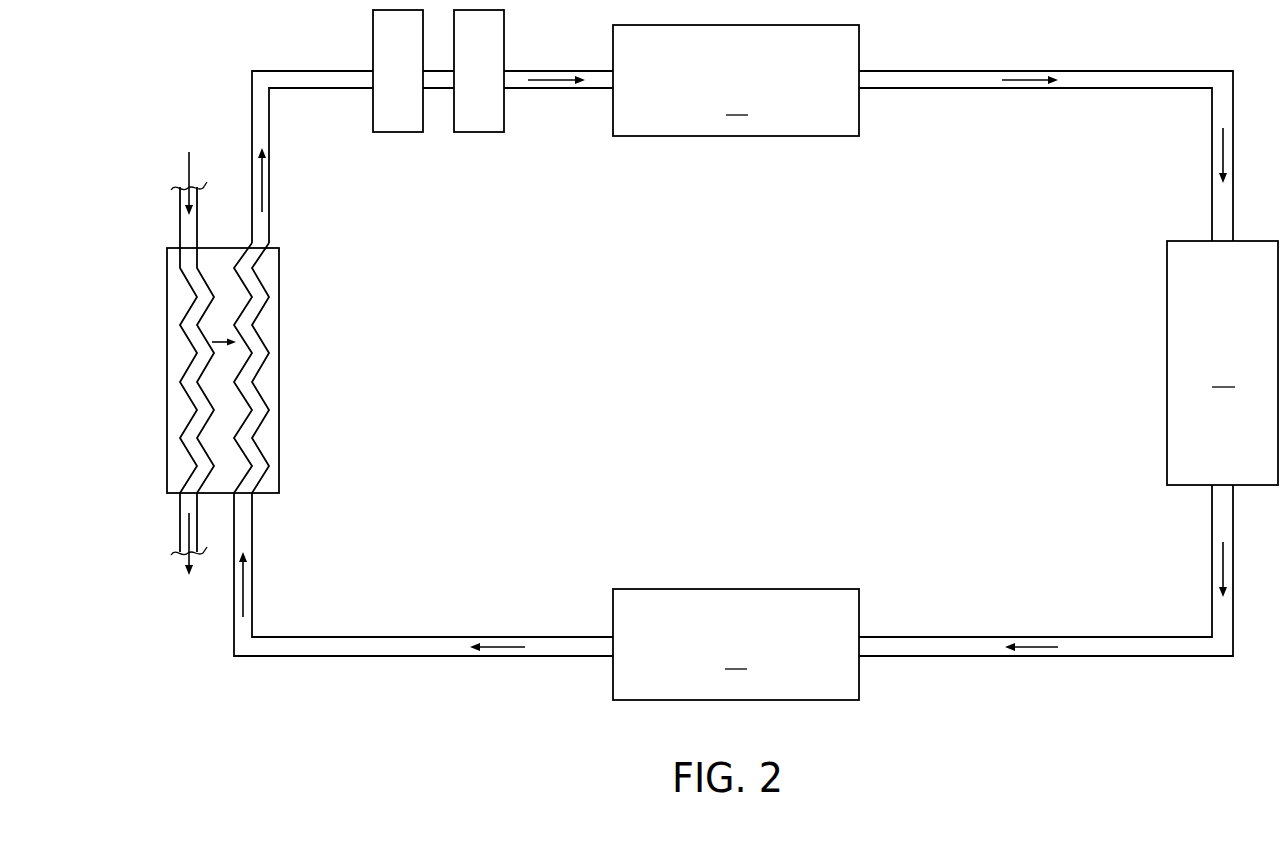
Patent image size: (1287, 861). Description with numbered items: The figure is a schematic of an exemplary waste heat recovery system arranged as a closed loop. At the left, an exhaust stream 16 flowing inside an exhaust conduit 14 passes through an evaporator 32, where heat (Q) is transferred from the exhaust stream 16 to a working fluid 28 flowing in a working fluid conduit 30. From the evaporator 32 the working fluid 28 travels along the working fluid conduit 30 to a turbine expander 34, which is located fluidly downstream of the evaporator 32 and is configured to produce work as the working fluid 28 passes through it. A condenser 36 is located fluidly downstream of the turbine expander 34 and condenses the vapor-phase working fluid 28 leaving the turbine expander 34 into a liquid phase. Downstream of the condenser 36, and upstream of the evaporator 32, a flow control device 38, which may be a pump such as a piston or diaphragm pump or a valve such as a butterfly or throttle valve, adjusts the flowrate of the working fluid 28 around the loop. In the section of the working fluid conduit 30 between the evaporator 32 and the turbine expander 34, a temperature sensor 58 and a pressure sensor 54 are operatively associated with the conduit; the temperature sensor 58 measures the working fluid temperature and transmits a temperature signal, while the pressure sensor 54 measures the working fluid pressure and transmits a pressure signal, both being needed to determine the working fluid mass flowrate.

The exhaust conduit 14 is at (154, 363).
The exhaust stream 16 is at (178, 214).
The working fluid 28 is at (302, 83).
The working fluid conduit 30 is at (313, 71).
The evaporator 32 is at (280, 370).
The turbine expander 34 is at (736, 80).
The condenser 36 is at (1222, 363).
The flow control device 38 is at (736, 644).
The pressure sensor 54 is at (480, 132).
The temperature sensor 58 is at (397, 132).